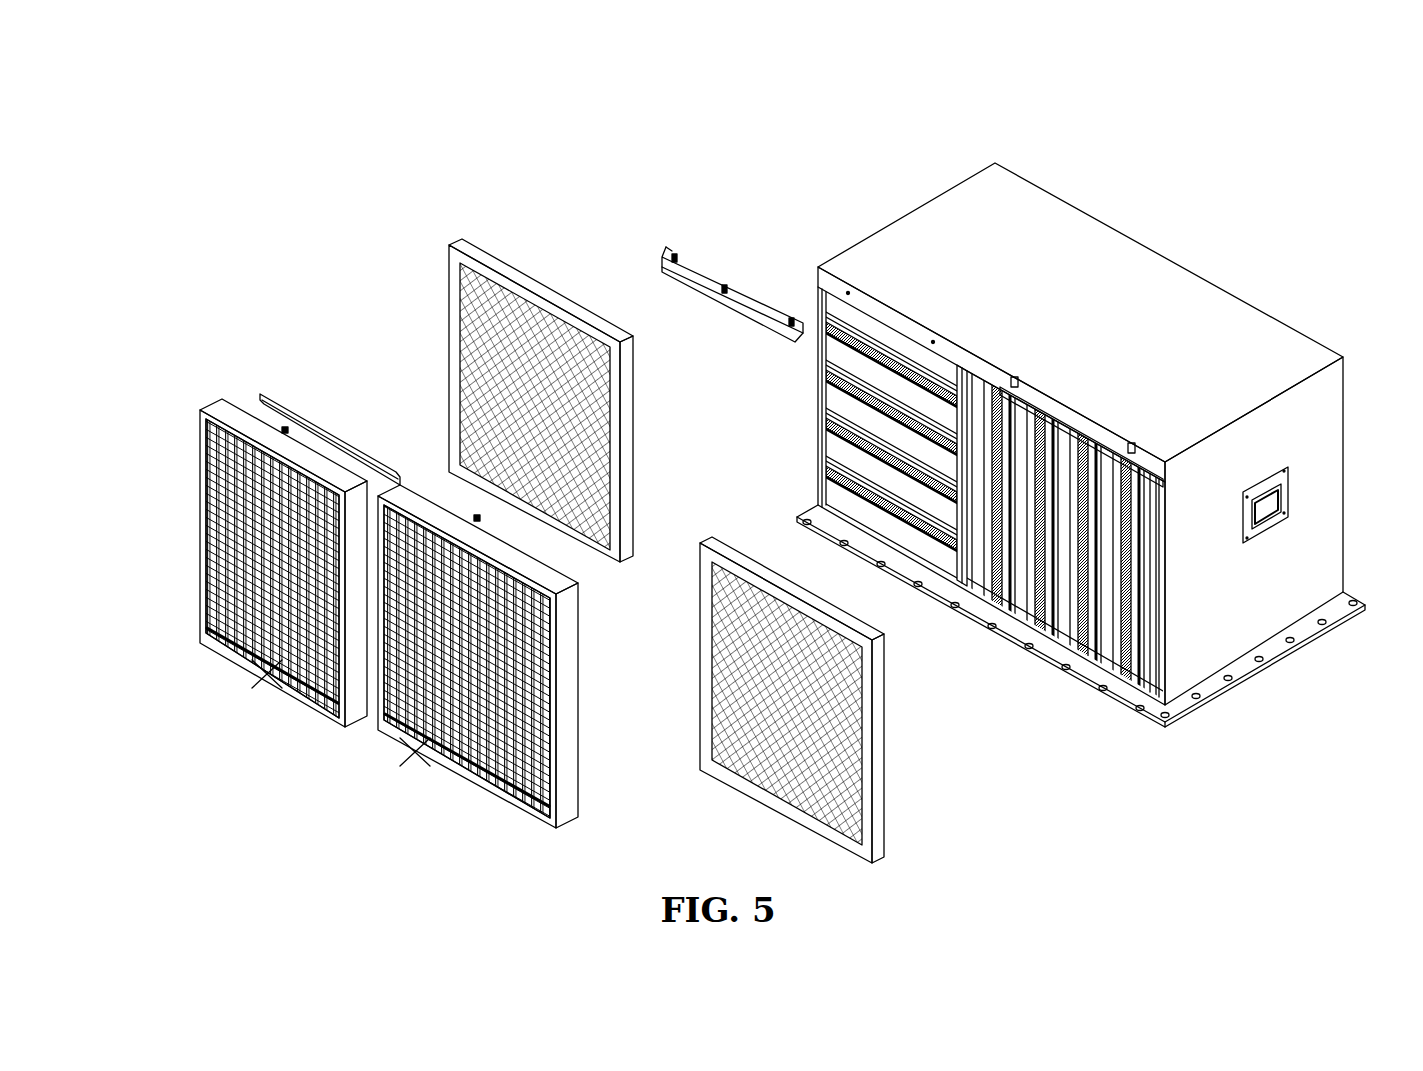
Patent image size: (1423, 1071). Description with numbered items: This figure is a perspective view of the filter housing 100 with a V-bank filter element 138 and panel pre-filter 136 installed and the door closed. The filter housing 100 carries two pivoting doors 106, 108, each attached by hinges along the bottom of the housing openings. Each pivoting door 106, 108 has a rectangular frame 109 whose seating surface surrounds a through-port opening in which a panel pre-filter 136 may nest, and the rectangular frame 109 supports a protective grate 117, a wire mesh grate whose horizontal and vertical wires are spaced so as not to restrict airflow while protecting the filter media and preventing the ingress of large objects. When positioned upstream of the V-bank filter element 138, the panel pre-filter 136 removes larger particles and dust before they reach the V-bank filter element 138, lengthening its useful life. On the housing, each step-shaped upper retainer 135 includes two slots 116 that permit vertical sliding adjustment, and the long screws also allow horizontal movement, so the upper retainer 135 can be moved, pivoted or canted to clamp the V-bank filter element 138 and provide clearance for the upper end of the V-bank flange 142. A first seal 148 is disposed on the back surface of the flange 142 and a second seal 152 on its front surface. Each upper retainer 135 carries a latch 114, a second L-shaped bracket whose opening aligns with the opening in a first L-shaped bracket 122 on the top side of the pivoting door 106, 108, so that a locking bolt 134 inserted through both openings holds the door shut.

The filter housing 100 is at (1288, 129).
The pivoting door 106 is at (200, 520).
The pivoting door 108 is at (575, 672).
The rectangular frame 109 is at (222, 658).
The latch 114 is at (722, 293).
The slot 116 is at (1016, 380).
The protective grate 117 is at (267, 675).
The first L-shaped bracket 122 is at (240, 400).
The locking bolt 134 is at (478, 524).
The upper retainer 135 is at (1080, 412).
The panel pre-filter 136 is at (445, 272).
The V-bank filter element 138 is at (845, 405).
The flange 142 is at (1152, 556).
The first seal 148 is at (1162, 528).
The second seal 152 is at (1152, 655).